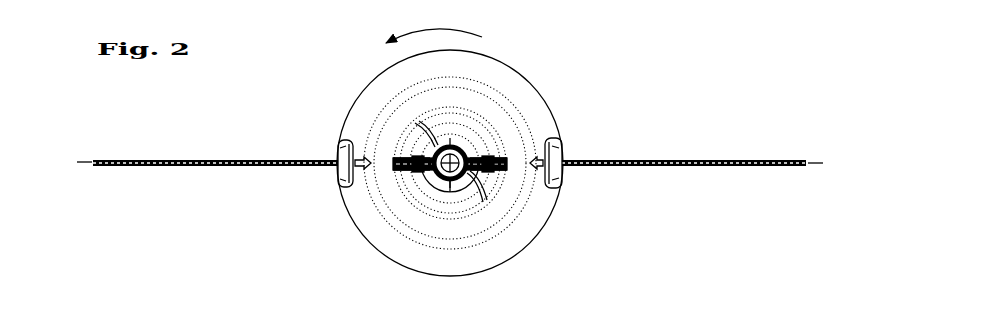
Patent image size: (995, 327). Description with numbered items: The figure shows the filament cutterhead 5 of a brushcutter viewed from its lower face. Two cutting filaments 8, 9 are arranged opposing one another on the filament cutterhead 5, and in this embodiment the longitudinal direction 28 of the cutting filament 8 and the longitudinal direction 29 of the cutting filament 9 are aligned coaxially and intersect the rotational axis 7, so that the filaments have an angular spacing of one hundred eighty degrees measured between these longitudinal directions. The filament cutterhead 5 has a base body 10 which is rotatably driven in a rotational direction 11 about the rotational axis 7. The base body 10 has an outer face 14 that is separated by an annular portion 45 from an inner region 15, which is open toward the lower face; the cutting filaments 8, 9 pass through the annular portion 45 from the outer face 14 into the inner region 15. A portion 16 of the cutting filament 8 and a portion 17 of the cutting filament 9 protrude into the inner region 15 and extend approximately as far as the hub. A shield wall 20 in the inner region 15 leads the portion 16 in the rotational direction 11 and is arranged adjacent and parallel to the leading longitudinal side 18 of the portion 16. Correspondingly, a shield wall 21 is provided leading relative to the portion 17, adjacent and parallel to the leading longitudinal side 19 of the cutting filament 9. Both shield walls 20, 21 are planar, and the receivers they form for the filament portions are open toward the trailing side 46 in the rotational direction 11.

The filament cutterhead 5 is at (597, 67).
The rotational axis 7 is at (437, 150).
The cutting filament 8 is at (195, 160).
The cutting filament 9 is at (700, 160).
The base body 10 is at (507, 88).
The rotational direction 11 is at (434, 27).
The outer face 14 is at (560, 189).
The inner region 15 is at (466, 204).
The portion of the cutting filament 16 is at (408, 157).
The portion of the cutting filament 17 is at (476, 169).
The leading longitudinal side 18 is at (417, 171).
The leading longitudinal side 19 is at (477, 155).
The shield wall 20 is at (413, 169).
The shield wall 21 is at (493, 155).
The longitudinal direction 28 is at (84, 161).
The longitudinal direction 29 is at (815, 160).
The annular portion 45 is at (393, 245).
The trailing side 46 is at (418, 149).